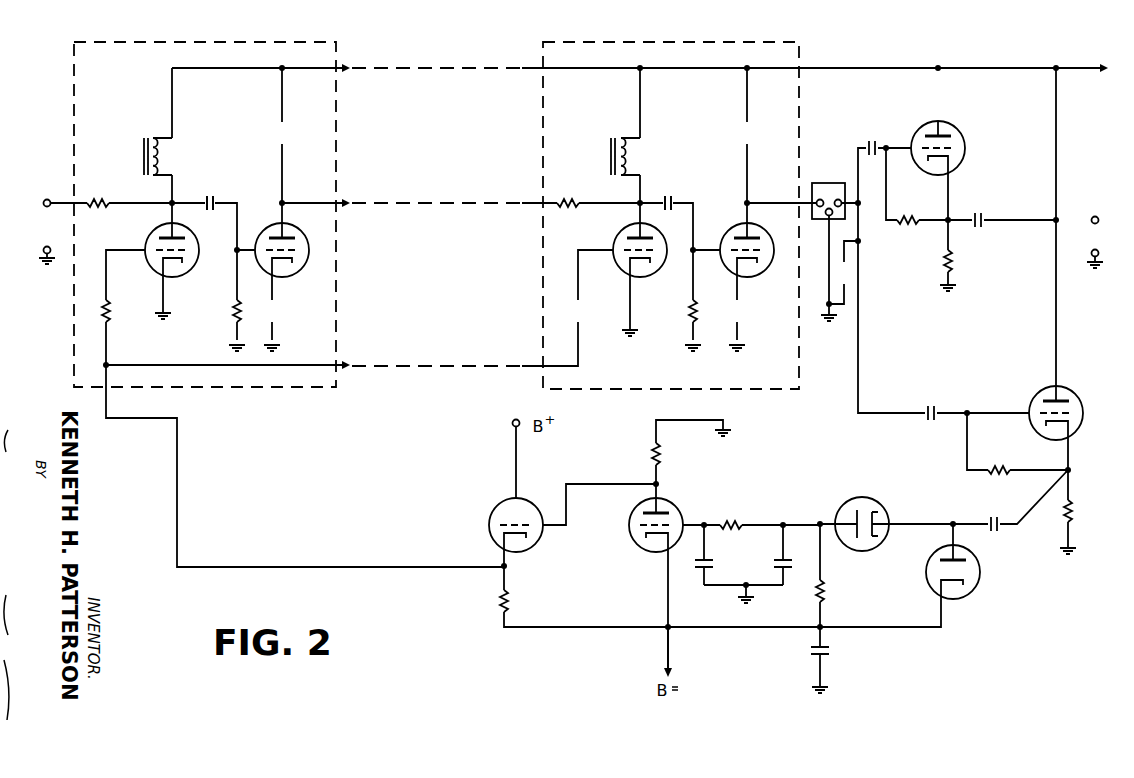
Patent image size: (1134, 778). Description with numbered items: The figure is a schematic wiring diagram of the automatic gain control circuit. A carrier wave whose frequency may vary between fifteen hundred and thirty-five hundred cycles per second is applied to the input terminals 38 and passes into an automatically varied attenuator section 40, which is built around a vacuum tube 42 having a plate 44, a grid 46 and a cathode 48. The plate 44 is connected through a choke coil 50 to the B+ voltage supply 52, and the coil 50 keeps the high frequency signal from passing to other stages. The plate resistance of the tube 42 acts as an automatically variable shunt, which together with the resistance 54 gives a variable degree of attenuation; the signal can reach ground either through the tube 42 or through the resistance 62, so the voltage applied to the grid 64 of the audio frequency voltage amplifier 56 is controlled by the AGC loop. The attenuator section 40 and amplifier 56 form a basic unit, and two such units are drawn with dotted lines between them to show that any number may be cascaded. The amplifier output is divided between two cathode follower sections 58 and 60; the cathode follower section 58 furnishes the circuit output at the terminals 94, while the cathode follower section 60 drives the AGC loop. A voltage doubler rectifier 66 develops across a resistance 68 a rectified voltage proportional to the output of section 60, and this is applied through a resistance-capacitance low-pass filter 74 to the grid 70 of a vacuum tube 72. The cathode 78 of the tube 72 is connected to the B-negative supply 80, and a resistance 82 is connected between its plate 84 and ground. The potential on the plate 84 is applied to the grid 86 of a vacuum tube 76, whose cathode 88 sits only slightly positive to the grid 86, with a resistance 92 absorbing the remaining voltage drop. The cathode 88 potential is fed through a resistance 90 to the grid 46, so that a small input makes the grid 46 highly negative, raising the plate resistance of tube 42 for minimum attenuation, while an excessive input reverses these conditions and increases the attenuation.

The input terminals 38 is at (43, 250).
The attenuator section 40 is at (197, 157).
The vacuum tube 42 is at (198, 250).
The plate 44 is at (161, 231).
The grid 46 is at (154, 254).
The cathode 48 is at (176, 264).
The choke coil 50 is at (140, 164).
The B+ voltage supply 52 is at (241, 64).
The resistance 54 is at (98, 200).
The audio frequency voltage amplifier 56 is at (308, 223).
The cathode follower section 58 is at (965, 125).
The cathode follower section 60 is at (1084, 385).
The resistance 62 is at (233, 308).
The grid 64 is at (310, 250).
The voltage doubler rectifier 66 is at (926, 572).
The resistance 68 is at (822, 586).
The grid 70 is at (632, 516).
The vacuum tube 72 is at (676, 508).
The low-pass filter 74 is at (731, 560).
The vacuum tube 76 is at (537, 510).
The cathode 78 is at (655, 548).
The B-negative supply 80 is at (671, 674).
The resistance 82 is at (660, 454).
The plate 84 is at (642, 499).
The grid 86 is at (492, 525).
The cathode 88 is at (526, 542).
The resistance 90 is at (108, 308).
The resistance 92 is at (506, 600).
The terminals 94 is at (1099, 222).